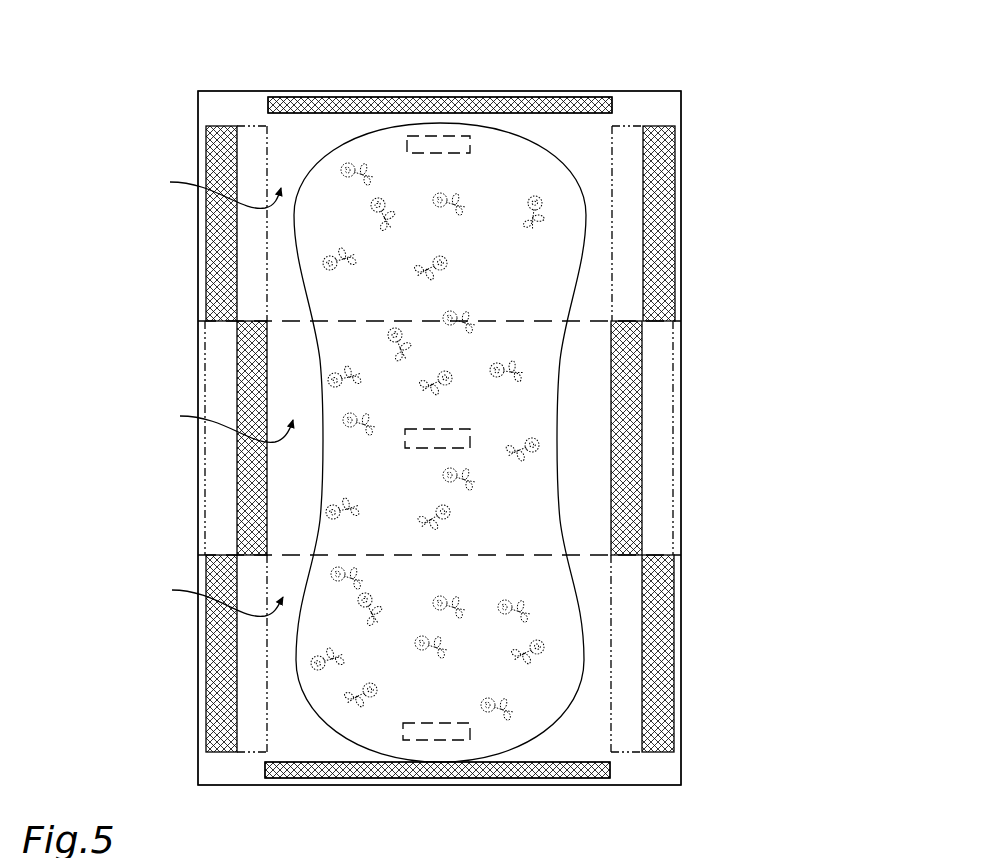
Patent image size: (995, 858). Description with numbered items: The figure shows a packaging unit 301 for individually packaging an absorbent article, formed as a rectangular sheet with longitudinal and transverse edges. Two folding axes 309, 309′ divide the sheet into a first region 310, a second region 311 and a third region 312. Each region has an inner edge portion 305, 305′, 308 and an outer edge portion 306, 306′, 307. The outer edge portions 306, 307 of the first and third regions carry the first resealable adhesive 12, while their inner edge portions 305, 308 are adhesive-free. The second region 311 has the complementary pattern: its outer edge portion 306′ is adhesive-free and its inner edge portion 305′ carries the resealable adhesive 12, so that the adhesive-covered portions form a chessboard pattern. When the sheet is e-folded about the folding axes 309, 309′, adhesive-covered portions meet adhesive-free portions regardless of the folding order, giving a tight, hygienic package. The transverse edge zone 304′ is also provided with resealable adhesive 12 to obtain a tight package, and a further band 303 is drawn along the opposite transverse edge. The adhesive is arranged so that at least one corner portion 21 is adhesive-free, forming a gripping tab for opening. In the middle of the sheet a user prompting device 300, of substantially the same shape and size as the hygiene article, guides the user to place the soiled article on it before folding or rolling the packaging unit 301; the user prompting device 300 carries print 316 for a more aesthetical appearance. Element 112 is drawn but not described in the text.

The packaging unit 301 is at (742, 54).
The corner portion 21 is at (217, 106).
The first resealable adhesive 12 is at (470, 106).
The user prompting device 300 is at (522, 172).
The bottom adhesive/seal band 303 is at (388, 722).
The transverse edge zone 304′ is at (318, 104).
The inner edge portion 305 is at (256, 240).
The inner edge portion 305′ is at (258, 460).
The outer edge portion 306 is at (222, 225).
The outer edge portion 306′ is at (216, 370).
The outer edge portion 307 is at (218, 628).
The inner edge portion 308 is at (254, 680).
The first folding axis 309 is at (433, 320).
The second folding axis 309′ is at (463, 557).
The first region 310 is at (204, 187).
The second region 311 is at (217, 421).
The third region 312 is at (206, 593).
The print 316 is at (493, 376).
The fastening / attachment element 112 is at (445, 144).